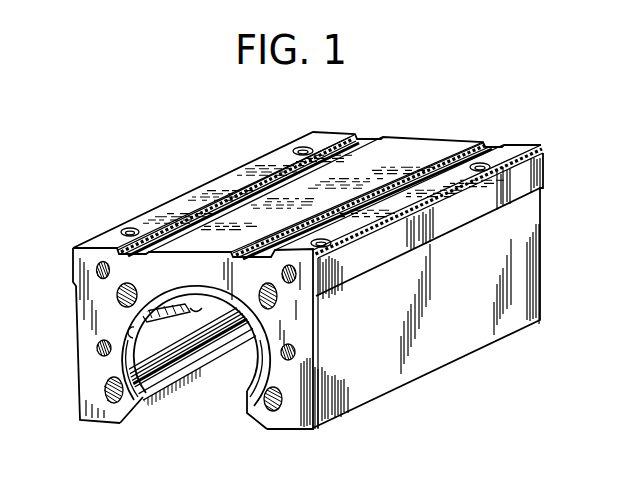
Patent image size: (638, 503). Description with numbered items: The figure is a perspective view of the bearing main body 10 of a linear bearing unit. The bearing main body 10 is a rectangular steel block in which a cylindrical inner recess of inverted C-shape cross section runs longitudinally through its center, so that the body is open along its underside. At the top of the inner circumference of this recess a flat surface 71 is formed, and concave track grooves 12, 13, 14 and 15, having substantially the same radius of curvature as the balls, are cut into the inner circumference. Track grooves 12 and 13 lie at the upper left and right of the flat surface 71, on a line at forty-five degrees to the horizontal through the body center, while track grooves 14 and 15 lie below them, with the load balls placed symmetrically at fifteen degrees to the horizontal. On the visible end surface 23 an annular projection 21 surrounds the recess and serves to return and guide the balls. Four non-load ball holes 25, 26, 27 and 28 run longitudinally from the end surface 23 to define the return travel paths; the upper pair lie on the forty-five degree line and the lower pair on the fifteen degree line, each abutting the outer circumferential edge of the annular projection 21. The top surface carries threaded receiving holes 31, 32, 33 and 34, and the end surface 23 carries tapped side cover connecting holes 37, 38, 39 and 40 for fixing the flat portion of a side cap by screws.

The bearing main body 10 is at (243, 226).
The track groove 12 is at (172, 320).
The track groove 13 is at (235, 355).
The track groove 14 is at (160, 400).
The track groove 15 is at (245, 395).
The annular projection 21 is at (130, 333).
The end surface 23 is at (300, 335).
The non-load ball hole 25 is at (117, 296).
The non-load ball hole 26 is at (262, 292).
The non-load ball hole 27 is at (105, 392).
The non-load ball hole 28 is at (273, 411).
The threaded receiving hole 31 is at (128, 228).
The threaded receiving hole 32 is at (301, 147).
The threaded receiving hole 33 is at (320, 239).
The threaded receiving hole 34 is at (480, 163).
The side cover connecting hole 37 is at (101, 262).
The side cover connecting hole 38 is at (97, 350).
The side cover connecting hole 39 is at (297, 275).
The side cover connecting hole 40 is at (296, 353).
The flat surface 71 is at (197, 307).